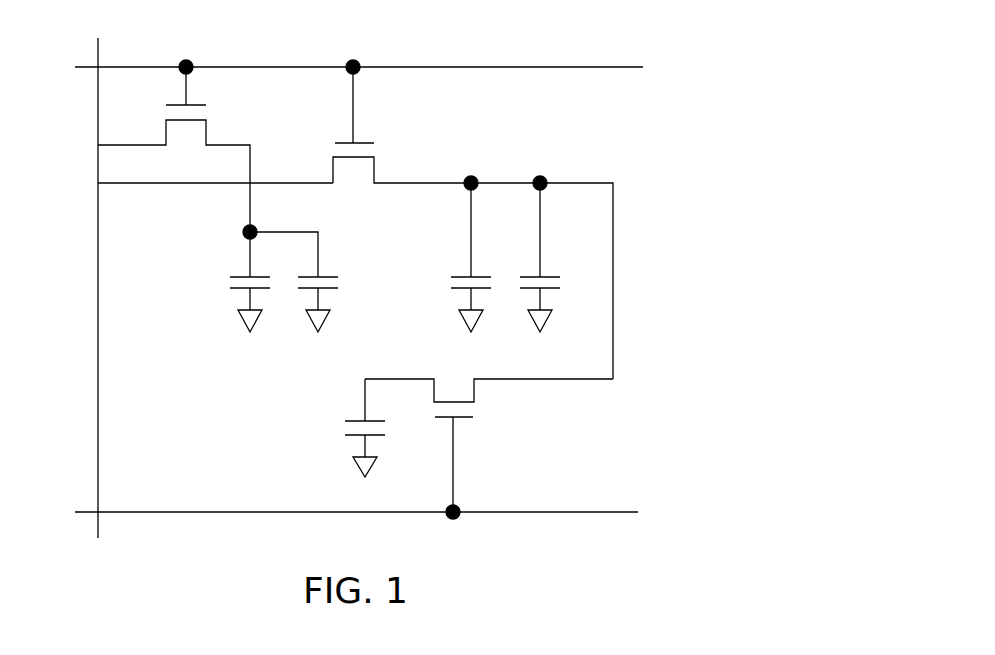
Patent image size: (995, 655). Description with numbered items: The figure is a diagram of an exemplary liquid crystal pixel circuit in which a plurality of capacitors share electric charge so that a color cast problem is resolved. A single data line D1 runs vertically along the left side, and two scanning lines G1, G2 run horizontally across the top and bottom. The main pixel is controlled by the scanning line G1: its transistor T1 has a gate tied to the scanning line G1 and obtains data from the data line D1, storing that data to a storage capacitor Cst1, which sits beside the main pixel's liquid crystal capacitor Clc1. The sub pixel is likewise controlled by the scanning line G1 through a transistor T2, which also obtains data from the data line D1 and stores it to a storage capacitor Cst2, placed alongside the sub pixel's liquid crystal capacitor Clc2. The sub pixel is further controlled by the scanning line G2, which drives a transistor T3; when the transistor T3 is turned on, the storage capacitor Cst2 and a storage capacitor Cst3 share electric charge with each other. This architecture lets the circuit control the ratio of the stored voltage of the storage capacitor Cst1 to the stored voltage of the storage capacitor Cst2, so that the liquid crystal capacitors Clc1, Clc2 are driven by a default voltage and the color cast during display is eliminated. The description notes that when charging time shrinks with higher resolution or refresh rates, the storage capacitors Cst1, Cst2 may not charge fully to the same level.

The data line D1 is at (97, 276).
The scanning line G1 is at (345, 68).
The scanning line G2 is at (342, 513).
The transistor T1 is at (215, 149).
The transistor T2 is at (473, 223).
The transistor T3 is at (489, 435).
The storage capacitor Cst1 is at (231, 282).
The liquid crystal capacitor Clc1 is at (309, 282).
The storage capacitor Cst2 is at (452, 257).
The liquid crystal capacitor Clc2 is at (555, 257).
The storage capacitor Cst3 is at (344, 428).